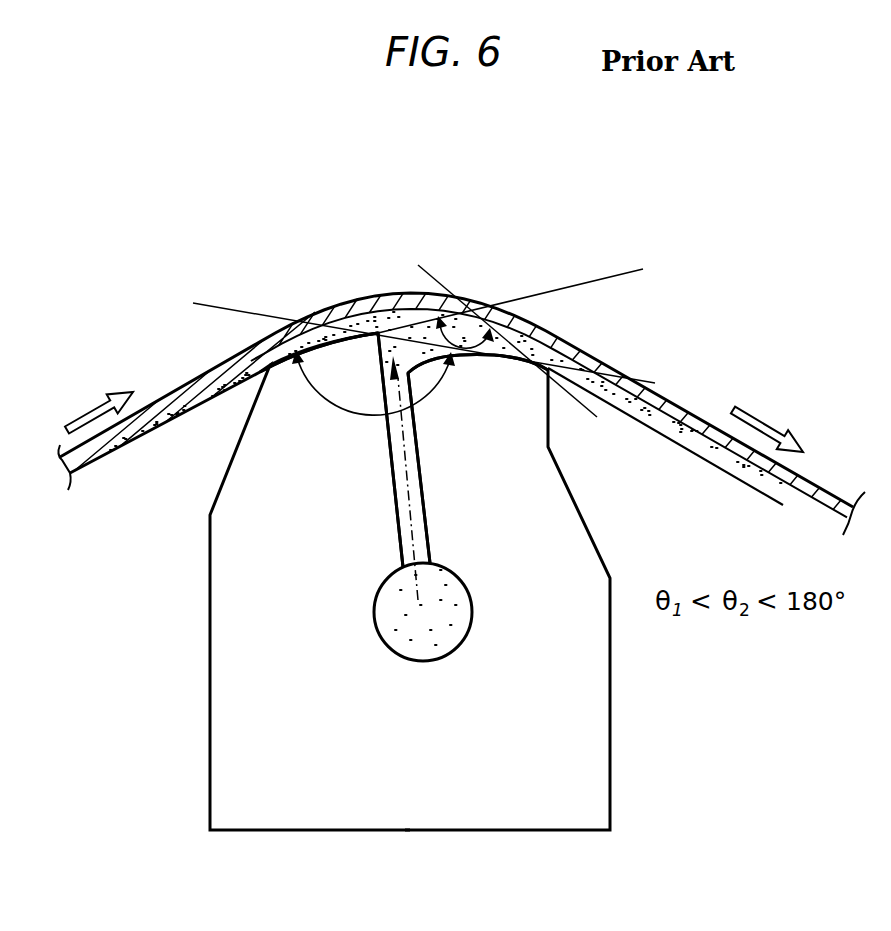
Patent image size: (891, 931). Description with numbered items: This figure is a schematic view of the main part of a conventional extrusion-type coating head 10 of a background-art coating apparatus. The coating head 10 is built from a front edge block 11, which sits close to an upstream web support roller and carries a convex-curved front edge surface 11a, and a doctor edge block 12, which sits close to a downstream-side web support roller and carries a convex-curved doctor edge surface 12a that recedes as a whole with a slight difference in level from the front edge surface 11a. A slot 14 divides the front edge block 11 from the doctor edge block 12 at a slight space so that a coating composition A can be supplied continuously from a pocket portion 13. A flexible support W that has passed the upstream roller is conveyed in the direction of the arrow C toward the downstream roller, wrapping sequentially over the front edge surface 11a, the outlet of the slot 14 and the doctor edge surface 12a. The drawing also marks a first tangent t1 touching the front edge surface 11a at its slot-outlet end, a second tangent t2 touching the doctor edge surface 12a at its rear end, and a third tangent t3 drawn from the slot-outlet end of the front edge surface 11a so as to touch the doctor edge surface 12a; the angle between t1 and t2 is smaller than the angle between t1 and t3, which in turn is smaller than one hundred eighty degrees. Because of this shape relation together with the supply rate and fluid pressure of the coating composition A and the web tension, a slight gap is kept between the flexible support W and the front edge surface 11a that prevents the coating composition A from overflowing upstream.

The extrusion-type coating head 10 is at (213, 199).
The front edge block 11 is at (300, 583).
The front edge surface 11a is at (323, 348).
The doctor edge block 12 is at (522, 504).
The doctor edge surface 12a is at (500, 358).
The pocket portion 13 is at (430, 661).
The slot 14 is at (423, 520).
The flexible support W is at (148, 428).
The coating composition A is at (418, 598).
The conveyance direction arrow C is at (430, 419).
The first tangent t1 is at (607, 280).
The second tangent t2 is at (437, 278).
The third tangent t3 is at (232, 306).